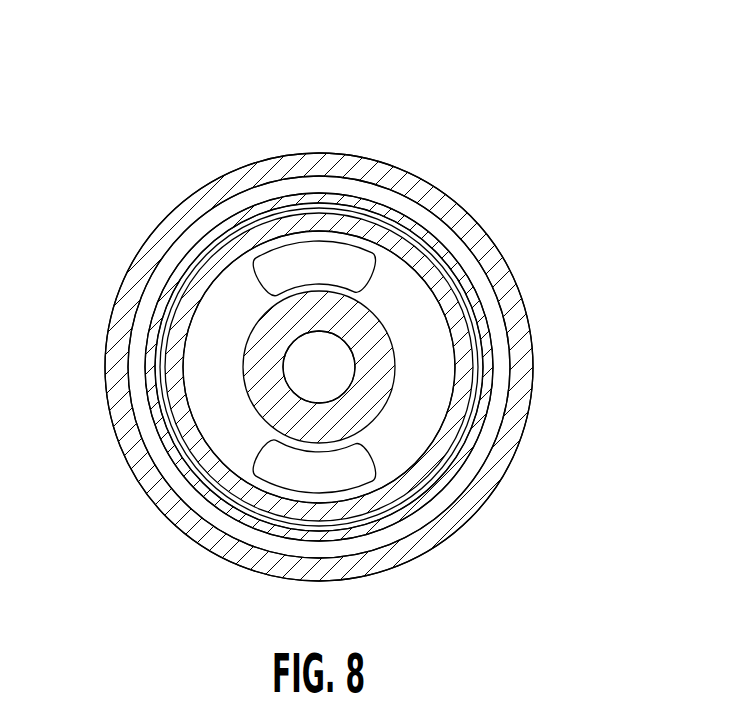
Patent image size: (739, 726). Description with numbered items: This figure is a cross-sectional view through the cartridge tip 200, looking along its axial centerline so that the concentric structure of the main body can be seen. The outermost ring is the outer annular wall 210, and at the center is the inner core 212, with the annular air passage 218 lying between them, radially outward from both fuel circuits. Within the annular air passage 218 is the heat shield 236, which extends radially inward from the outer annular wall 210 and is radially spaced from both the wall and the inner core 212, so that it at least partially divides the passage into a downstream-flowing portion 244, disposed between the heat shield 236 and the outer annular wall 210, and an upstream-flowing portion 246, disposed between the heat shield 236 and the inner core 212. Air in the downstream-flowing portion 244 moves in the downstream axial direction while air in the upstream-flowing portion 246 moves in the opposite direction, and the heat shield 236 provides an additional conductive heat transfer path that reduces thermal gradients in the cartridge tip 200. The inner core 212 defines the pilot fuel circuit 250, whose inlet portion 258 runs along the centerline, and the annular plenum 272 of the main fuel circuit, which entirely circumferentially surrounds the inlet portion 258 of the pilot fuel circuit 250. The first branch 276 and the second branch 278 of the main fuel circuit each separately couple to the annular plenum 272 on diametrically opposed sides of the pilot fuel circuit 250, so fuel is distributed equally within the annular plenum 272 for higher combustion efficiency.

The cartridge tip 200 is at (133, 117).
The outer annular wall 210 is at (488, 258).
The inner core 212 is at (262, 387).
The annular air passage 218 is at (190, 477).
The heat shield 236 is at (483, 400).
The downstream-flowing portion 244 is at (462, 453).
The upstream-flowing portion 246 is at (375, 573).
The pilot fuel circuit 250 is at (341, 284).
The inlet portion 258 is at (329, 356).
The annular plenum 272 is at (204, 358).
The first branch 276 is at (292, 262).
The second branch 278 is at (338, 474).